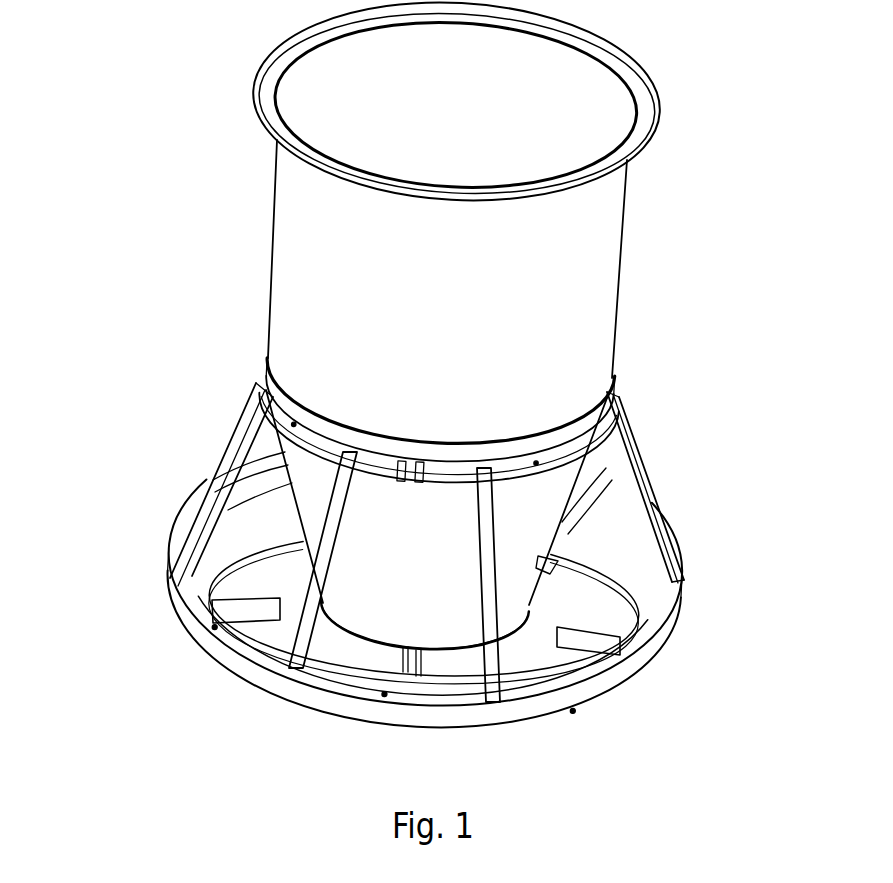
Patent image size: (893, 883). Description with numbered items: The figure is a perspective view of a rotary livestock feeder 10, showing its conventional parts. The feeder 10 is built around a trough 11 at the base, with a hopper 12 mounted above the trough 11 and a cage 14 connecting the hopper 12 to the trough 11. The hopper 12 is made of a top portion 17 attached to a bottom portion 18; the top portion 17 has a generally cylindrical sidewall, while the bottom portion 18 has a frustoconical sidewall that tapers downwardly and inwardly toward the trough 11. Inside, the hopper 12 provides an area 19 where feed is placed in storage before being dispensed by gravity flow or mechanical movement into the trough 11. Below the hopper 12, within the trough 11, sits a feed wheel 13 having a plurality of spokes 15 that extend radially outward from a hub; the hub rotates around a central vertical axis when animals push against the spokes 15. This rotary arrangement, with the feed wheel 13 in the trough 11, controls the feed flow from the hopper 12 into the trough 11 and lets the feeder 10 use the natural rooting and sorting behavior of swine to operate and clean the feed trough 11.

The rotary livestock feeder 10 is at (394, 387).
The trough 11 is at (222, 555).
The hopper 12 is at (615, 317).
The feed wheel 13 is at (543, 652).
The cage 14 is at (637, 447).
The spokes 15 is at (277, 628).
The top portion 17 is at (288, 265).
The bottom portion 18 is at (303, 492).
The area 19 is at (525, 98).